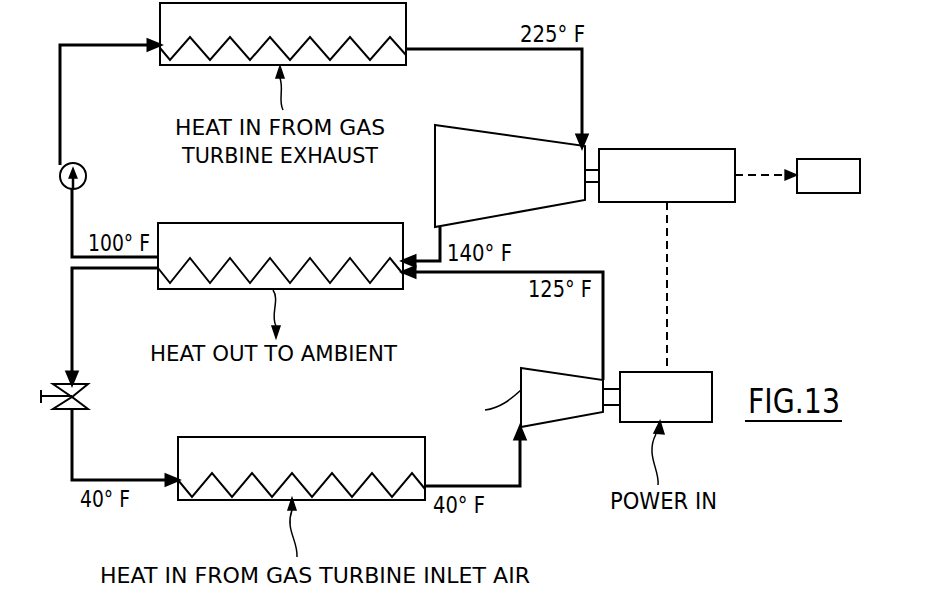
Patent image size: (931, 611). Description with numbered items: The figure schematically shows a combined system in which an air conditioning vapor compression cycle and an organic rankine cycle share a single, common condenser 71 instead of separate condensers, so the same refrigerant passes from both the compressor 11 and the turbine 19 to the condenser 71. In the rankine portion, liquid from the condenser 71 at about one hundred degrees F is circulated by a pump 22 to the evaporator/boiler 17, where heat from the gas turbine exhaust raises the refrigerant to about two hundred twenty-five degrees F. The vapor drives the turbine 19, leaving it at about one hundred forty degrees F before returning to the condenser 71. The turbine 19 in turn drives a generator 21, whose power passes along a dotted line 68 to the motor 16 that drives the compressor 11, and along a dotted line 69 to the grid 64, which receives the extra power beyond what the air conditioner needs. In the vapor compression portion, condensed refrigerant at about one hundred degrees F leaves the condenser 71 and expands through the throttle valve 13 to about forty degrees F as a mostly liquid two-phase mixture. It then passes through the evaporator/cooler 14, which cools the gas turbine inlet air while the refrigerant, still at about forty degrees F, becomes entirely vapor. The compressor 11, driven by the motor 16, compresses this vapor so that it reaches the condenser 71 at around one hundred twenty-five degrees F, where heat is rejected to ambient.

The compressor 11 is at (563, 413).
The throttle valve 13 is at (62, 412).
The evaporator/cooler 14 is at (210, 502).
The motor 16 is at (680, 373).
The evaporator/boiler 17 is at (388, 66).
The turbine 19 is at (533, 205).
The generator 21 is at (677, 153).
The pump 22 is at (63, 186).
The grid 64 is at (822, 160).
The dotted line 68 is at (668, 217).
The dotted line 69 is at (751, 174).
The common condenser 71 is at (305, 223).